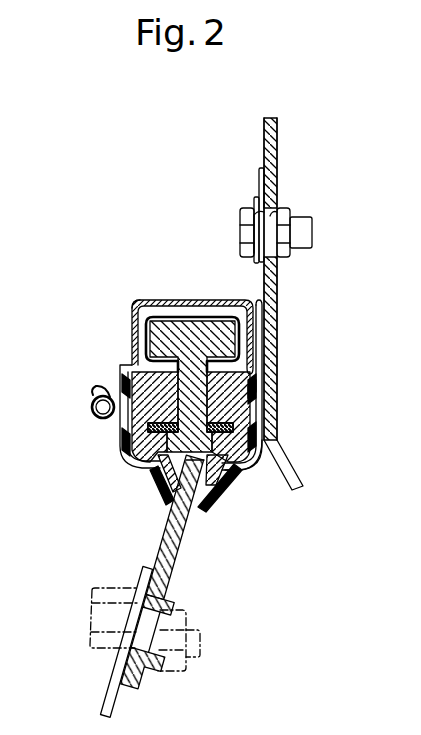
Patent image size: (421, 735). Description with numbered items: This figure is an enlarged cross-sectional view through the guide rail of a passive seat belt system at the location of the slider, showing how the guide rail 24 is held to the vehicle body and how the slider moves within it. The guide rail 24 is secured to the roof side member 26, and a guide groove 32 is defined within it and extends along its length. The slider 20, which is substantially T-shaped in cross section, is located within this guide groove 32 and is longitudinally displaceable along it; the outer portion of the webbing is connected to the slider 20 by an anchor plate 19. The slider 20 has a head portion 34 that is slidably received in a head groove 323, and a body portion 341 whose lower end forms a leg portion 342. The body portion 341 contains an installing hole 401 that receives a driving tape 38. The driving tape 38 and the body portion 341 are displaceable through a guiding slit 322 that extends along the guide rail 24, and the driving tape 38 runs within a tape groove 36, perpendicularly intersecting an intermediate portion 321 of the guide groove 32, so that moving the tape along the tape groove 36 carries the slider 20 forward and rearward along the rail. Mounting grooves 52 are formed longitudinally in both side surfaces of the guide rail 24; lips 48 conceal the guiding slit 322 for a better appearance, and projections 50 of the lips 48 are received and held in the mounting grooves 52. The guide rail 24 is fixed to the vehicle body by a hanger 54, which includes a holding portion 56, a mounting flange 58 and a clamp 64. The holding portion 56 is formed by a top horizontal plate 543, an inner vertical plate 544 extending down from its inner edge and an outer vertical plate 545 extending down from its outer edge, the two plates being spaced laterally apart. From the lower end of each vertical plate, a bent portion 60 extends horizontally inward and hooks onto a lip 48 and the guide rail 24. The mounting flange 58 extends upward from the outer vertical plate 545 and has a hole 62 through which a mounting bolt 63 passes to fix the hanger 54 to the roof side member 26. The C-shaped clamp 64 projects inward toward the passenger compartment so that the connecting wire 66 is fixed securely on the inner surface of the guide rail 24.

The anchor plate 19 is at (104, 690).
The slider 20 is at (174, 574).
The guide rail 24 is at (163, 316).
The roof side member 26 is at (264, 126).
The guide groove 32 is at (136, 406).
The intermediate portion 321 is at (167, 373).
The guiding slit 322 is at (160, 488).
The head groove 323 is at (119, 299).
The head portion 34 is at (251, 356).
The body portion 341 is at (250, 417).
The leg portion 342 is at (160, 597).
The tape groove 36 is at (131, 427).
The driving tape 38 is at (243, 464).
The installing hole 401 is at (184, 465).
The lips 48 is at (207, 493).
The projections 50 is at (274, 405).
The mounting grooves 52 is at (243, 400).
The hanger 54 is at (186, 334).
The top horizontal plate 543 is at (171, 303).
The inner vertical plate 544 is at (132, 352).
The outer vertical plate 545 is at (252, 322).
The holding portion 56 is at (135, 352).
The mounting flange 58 is at (259, 178).
The bent portions 60 is at (150, 465).
The hole 62 is at (278, 222).
The mounting bolt 63 is at (254, 225).
The clamp 64 is at (91, 408).
The connecting wire 66 is at (95, 419).